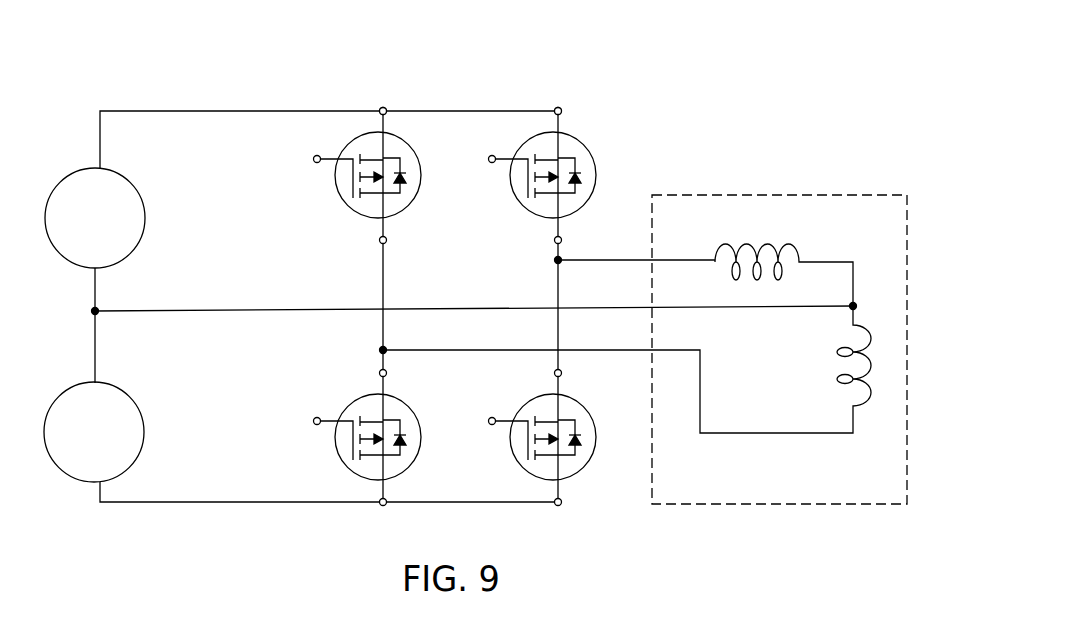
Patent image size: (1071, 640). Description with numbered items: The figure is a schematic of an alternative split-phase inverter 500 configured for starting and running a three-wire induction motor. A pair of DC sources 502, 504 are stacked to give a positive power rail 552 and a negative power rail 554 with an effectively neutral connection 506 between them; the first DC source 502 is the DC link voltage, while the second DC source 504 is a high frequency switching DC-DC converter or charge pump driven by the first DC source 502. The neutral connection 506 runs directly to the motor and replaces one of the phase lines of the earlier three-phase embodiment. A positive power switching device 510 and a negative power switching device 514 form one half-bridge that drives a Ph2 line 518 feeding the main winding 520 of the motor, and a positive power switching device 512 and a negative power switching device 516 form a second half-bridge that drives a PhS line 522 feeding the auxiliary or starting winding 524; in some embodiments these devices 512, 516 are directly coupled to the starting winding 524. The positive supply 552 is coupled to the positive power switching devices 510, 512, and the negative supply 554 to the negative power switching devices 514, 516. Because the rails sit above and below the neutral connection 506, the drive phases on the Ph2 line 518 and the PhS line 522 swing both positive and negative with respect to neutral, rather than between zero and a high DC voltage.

The motor drive circuit 500 is at (742, 62).
The DC source 502 is at (128, 181).
The DC source 504 is at (97, 383).
The neutral connection 506 is at (238, 311).
The positive power switching device 510 is at (410, 165).
The positive power switching device 512 is at (585, 165).
The negative power switching device 514 is at (408, 470).
The negative power switching device 516 is at (580, 470).
The Ph2 line 518 is at (700, 378).
The main winding 520 is at (877, 350).
The PhS line 522 is at (558, 260).
The auxiliary or starting winding 524 is at (800, 240).
The positive power rail 552 is at (329, 126).
The negative power rail 554 is at (329, 495).